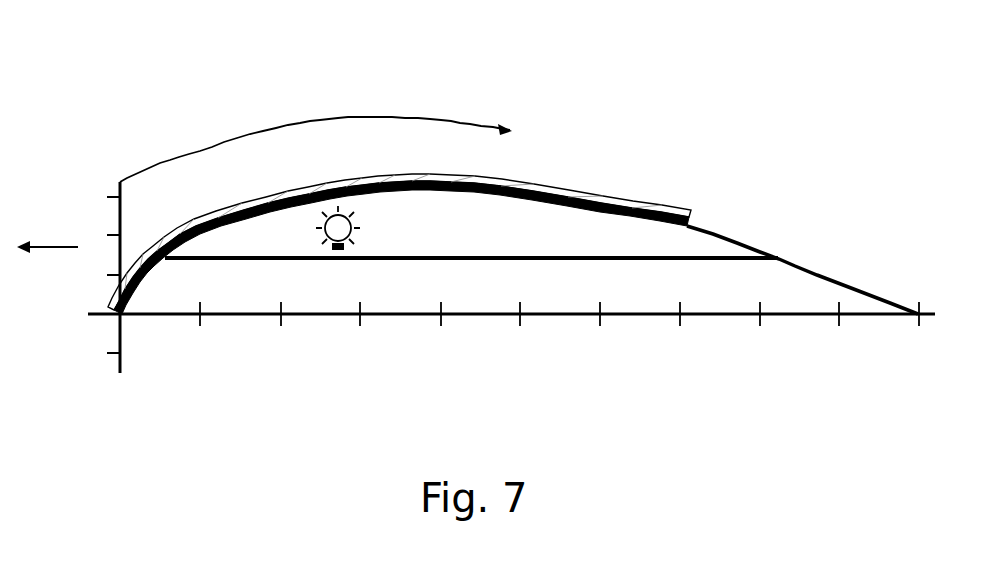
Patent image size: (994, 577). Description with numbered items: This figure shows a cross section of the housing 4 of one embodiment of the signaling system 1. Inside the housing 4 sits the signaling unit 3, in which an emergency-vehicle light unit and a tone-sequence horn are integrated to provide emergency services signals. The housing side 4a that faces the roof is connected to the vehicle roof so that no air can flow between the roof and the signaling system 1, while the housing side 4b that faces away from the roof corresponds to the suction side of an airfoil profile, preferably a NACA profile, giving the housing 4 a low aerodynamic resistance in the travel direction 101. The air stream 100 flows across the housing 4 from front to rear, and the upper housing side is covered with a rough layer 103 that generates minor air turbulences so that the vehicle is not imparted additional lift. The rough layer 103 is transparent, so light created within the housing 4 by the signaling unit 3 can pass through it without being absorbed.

The signaling system 1 is at (803, 162).
The signaling unit 3 is at (345, 222).
The housing 4 is at (511, 283).
The housing side facing the roof 4a is at (481, 317).
The housing side facing away from the roof 4b is at (715, 233).
The air stream 100 is at (338, 117).
The travel direction 101 is at (52, 247).
The rough layer 103 is at (587, 200).